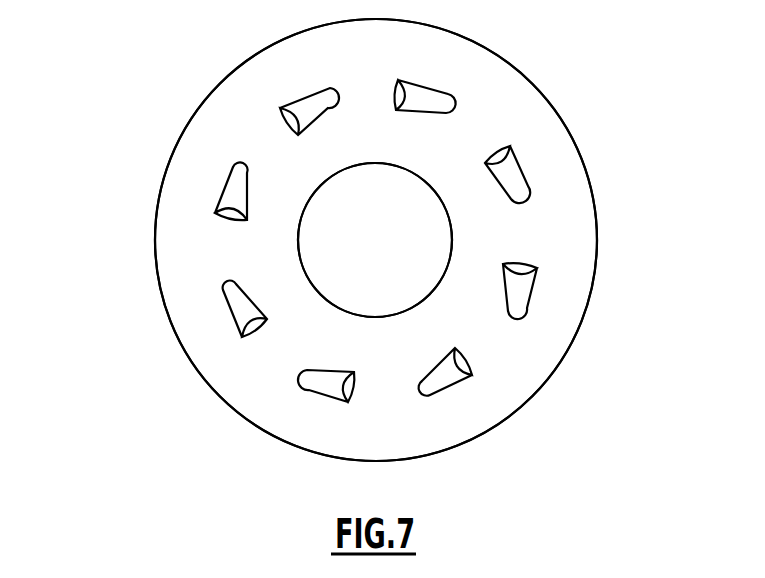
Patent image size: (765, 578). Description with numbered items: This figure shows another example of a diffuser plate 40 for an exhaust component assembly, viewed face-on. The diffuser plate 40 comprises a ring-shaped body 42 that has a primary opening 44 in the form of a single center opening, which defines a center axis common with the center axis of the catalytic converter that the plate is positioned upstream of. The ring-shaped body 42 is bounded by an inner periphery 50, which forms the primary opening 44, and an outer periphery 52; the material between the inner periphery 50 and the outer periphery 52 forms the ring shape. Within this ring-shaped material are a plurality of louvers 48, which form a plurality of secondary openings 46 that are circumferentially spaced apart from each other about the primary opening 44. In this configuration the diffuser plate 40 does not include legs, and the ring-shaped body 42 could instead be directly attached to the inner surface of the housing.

The diffuser plate 40 is at (122, 128).
The ring-shaped body 42 is at (489, 90).
The primary opening 44 is at (426, 262).
The secondary openings 46 is at (249, 336).
The louvers 48 is at (518, 180).
The inner periphery 50 is at (299, 267).
The outer periphery 52 is at (155, 228).